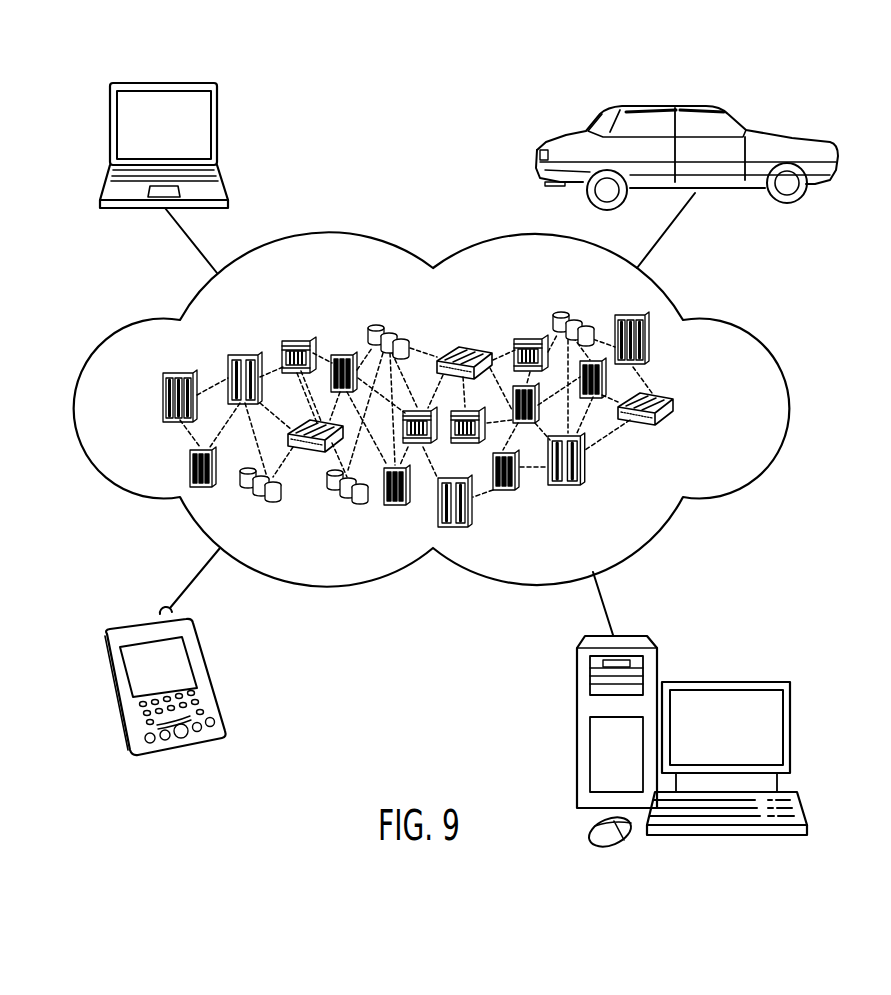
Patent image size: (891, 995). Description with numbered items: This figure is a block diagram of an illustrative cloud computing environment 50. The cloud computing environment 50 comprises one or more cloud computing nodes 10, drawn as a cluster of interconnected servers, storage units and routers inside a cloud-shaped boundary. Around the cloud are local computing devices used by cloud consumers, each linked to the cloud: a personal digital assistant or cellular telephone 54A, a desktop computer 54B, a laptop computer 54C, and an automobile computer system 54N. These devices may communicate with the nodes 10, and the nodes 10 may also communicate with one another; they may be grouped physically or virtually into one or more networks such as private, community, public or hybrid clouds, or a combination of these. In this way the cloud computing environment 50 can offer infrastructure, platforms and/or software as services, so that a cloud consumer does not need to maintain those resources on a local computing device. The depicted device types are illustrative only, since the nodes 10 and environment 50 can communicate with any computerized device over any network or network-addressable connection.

The cloud computing node 10 is at (680, 408).
The cloud computing environment 50 is at (738, 323).
The personal digital assistant or cellular telephone 54A is at (144, 626).
The desktop computer 54B is at (727, 681).
The laptop computer 54C is at (163, 83).
The automobile computer system 54N is at (670, 107).